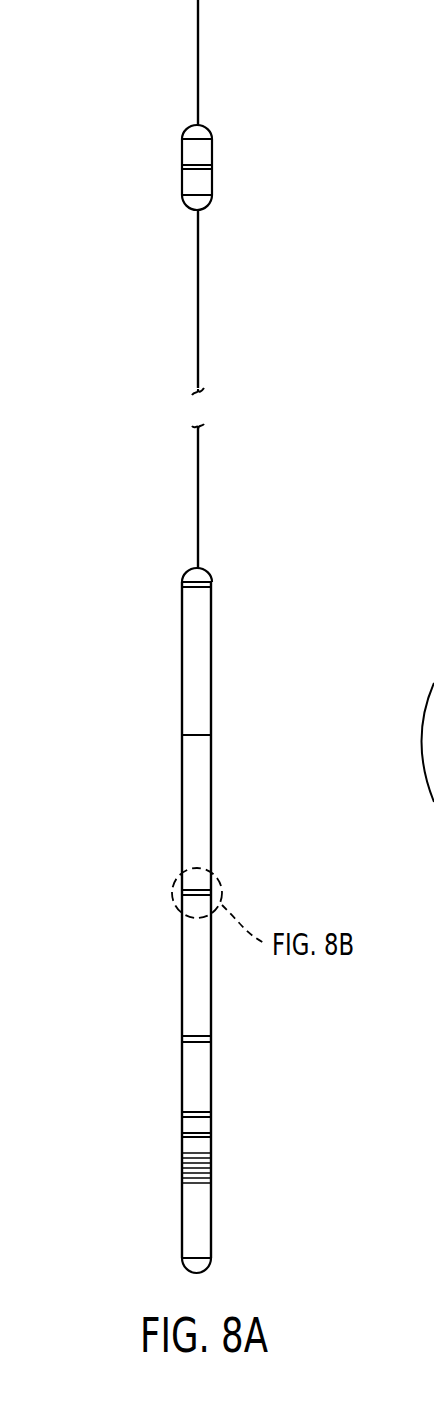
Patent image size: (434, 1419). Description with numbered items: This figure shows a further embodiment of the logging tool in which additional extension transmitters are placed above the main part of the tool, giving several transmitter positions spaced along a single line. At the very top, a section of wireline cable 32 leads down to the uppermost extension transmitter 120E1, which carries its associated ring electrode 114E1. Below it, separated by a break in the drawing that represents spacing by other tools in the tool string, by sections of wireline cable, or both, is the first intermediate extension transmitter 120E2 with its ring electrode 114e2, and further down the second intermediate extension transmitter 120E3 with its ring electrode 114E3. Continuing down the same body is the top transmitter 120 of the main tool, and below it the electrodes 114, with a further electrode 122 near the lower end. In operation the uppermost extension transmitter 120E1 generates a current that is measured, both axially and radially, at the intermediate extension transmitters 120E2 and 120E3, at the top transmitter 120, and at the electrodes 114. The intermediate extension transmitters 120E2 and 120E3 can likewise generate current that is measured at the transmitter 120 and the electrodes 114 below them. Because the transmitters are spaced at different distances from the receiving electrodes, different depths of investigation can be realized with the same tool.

The lead wire 32 is at (198, 72).
The ring electrode 114E1 is at (183, 167).
The uppermost extension transmitter 120E1 is at (245, 167).
The ring electrode 114e2 is at (183, 580).
The intermediate extension transmitter 120E2 is at (246, 915).
The ring electrode 114E3 is at (175, 892).
The intermediate extension transmitter 120E3 is at (242, 886).
The top transmitter 120 is at (223, 1040).
The electrodes 114 is at (212, 1162).
The ring electrode 122 is at (211, 1180).